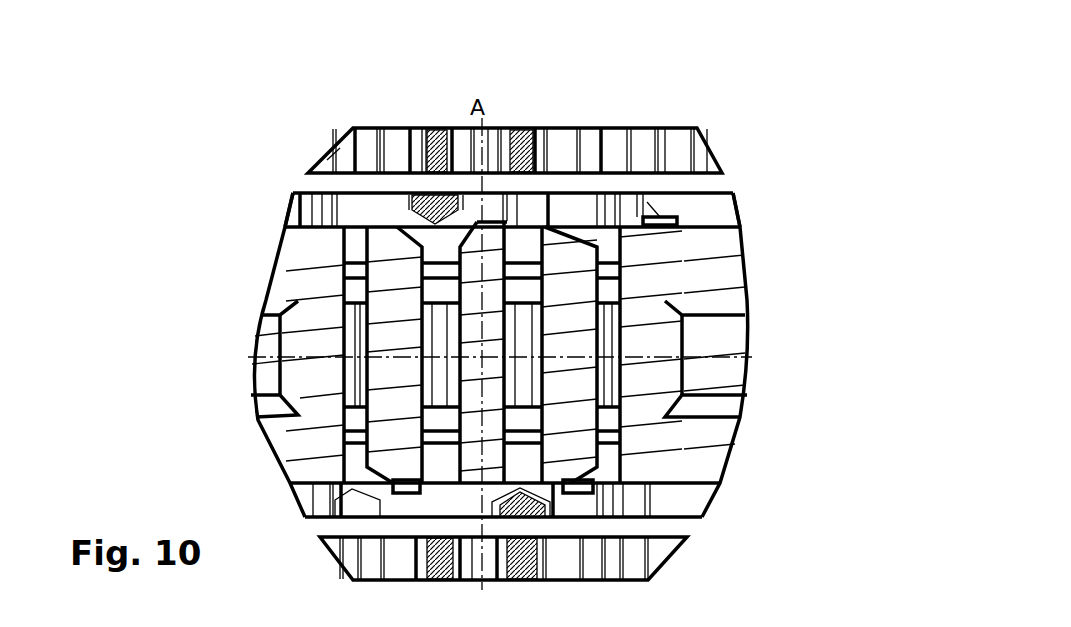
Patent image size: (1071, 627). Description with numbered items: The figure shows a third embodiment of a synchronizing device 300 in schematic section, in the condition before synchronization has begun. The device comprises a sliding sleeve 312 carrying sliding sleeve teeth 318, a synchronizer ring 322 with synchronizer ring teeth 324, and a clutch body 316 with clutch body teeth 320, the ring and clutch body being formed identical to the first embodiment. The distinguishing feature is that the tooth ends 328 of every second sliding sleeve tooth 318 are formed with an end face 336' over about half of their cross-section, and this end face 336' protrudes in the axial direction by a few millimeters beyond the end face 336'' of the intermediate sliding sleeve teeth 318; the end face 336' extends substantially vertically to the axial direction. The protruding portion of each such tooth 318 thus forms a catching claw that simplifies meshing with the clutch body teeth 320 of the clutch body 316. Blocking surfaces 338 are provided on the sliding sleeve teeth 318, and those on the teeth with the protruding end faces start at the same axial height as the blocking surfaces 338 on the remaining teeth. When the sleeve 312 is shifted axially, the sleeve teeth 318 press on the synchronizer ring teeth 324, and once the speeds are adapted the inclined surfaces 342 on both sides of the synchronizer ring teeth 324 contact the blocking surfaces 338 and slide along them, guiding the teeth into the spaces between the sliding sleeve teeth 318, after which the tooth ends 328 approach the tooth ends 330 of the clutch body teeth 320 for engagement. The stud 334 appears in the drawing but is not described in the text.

The synchronizing device 300 is at (137, 131).
The sliding sleeve 312 is at (778, 339).
The clutch body 316 is at (583, 103).
The sliding sleeve tooth 318 is at (366, 270).
The clutch body teeth 320 is at (446, 183).
The synchronizer ring 322 is at (574, 123).
The synchronizer ring teeth 324 is at (411, 207).
The tooth ends 328 is at (343, 243).
The tooth ends of the clutch body teeth 330 is at (558, 224).
The stud 334 is at (424, 212).
The end face 336' is at (541, 120).
The end face of the intermediate sliding sleeve teeth 336'' is at (628, 124).
The blocking surfaces 338 is at (438, 246).
The inclined surfaces 342 is at (494, 214).